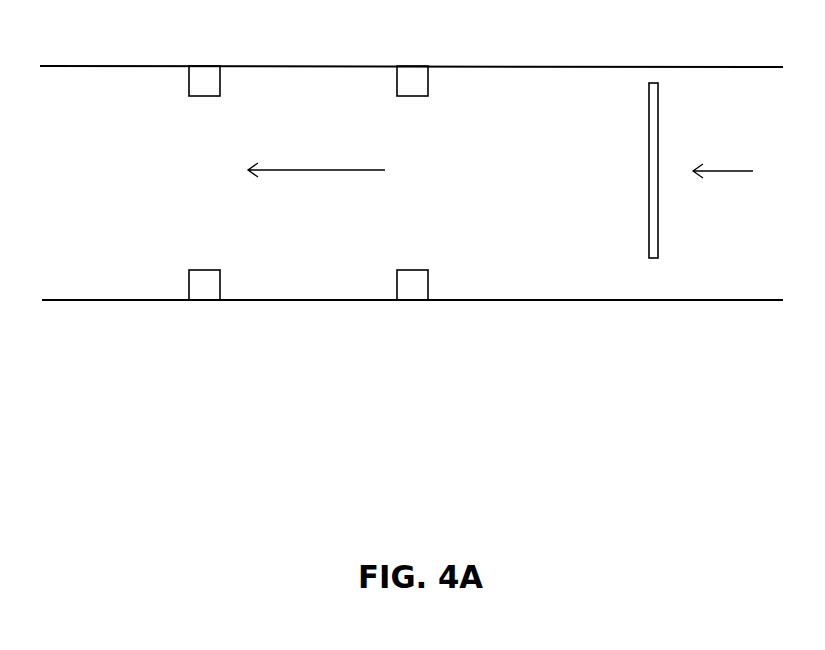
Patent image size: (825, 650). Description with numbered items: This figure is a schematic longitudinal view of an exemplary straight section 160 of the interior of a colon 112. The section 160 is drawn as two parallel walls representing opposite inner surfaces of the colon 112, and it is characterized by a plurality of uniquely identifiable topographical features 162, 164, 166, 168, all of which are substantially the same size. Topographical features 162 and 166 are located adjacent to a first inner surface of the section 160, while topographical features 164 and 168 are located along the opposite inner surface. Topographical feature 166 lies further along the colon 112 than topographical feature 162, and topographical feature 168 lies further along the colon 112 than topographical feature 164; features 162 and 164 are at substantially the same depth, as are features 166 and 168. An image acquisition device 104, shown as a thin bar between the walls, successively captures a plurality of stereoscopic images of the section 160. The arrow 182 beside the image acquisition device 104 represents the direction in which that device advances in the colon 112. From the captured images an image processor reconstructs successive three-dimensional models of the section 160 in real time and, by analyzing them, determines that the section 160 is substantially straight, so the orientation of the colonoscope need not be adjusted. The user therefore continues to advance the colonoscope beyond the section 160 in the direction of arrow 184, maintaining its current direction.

The colon 112 is at (577, 67).
The straight section 160 is at (520, 287).
The topographical feature 162 is at (412, 96).
The topographical feature 164 is at (412, 270).
The topographical feature 166 is at (203, 96).
The topographical feature 168 is at (204, 270).
The image acquisition device 104 is at (658, 110).
The arrow 182 is at (723, 172).
The arrow 184 is at (308, 171).